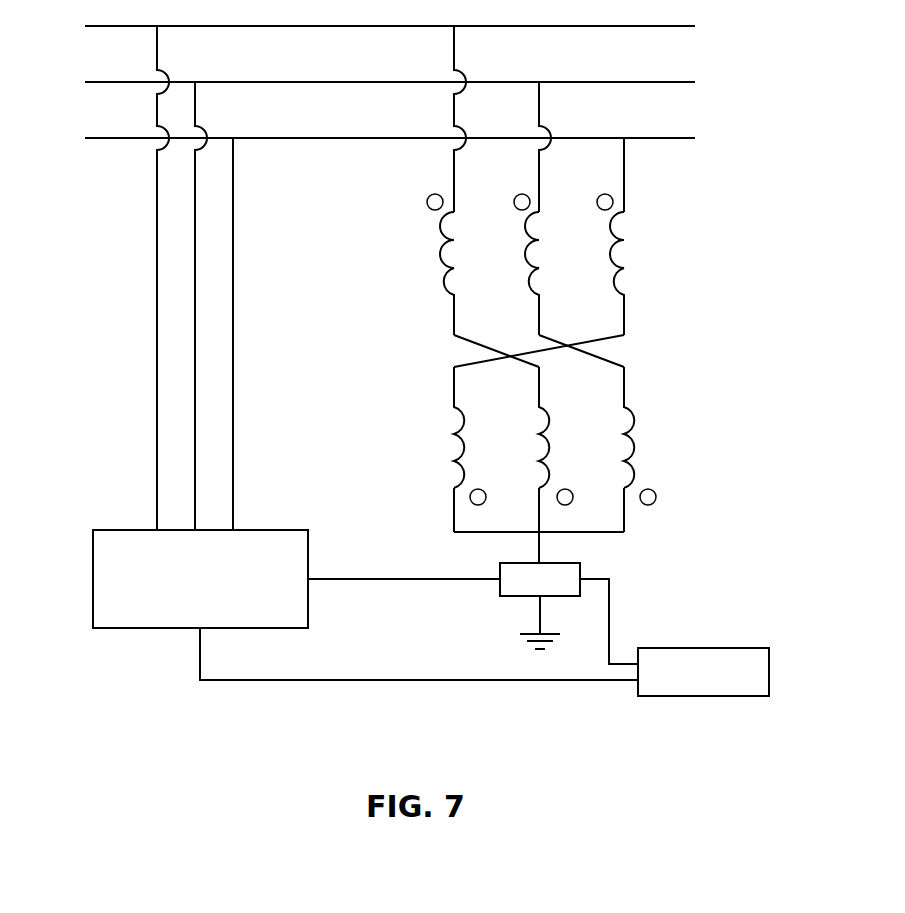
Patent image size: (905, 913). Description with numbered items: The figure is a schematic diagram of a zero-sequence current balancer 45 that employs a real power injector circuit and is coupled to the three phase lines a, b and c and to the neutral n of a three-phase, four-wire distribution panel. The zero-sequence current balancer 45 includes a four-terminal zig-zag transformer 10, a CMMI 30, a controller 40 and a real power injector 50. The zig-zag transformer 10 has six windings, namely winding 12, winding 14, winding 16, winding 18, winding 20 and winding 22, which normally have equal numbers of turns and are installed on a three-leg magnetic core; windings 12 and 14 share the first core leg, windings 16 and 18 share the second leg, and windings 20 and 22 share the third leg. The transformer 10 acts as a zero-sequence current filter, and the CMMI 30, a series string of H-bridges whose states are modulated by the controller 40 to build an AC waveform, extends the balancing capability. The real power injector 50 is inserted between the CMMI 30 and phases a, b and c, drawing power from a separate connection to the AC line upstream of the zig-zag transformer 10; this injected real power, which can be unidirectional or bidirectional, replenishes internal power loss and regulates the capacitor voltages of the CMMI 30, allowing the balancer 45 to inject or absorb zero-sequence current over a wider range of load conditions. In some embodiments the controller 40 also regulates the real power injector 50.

The zig-zag transformer 10 is at (576, 378).
The winding 12 is at (438, 253).
The winding 14 is at (640, 448).
The winding 16 is at (524, 250).
The winding 18 is at (466, 447).
The winding 20 is at (627, 238).
The winding 22 is at (556, 448).
The CMMI 30 is at (582, 572).
The controller 40 is at (700, 697).
The zero-sequence current balancer 45 is at (113, 315).
The real power injector 50 is at (92, 580).